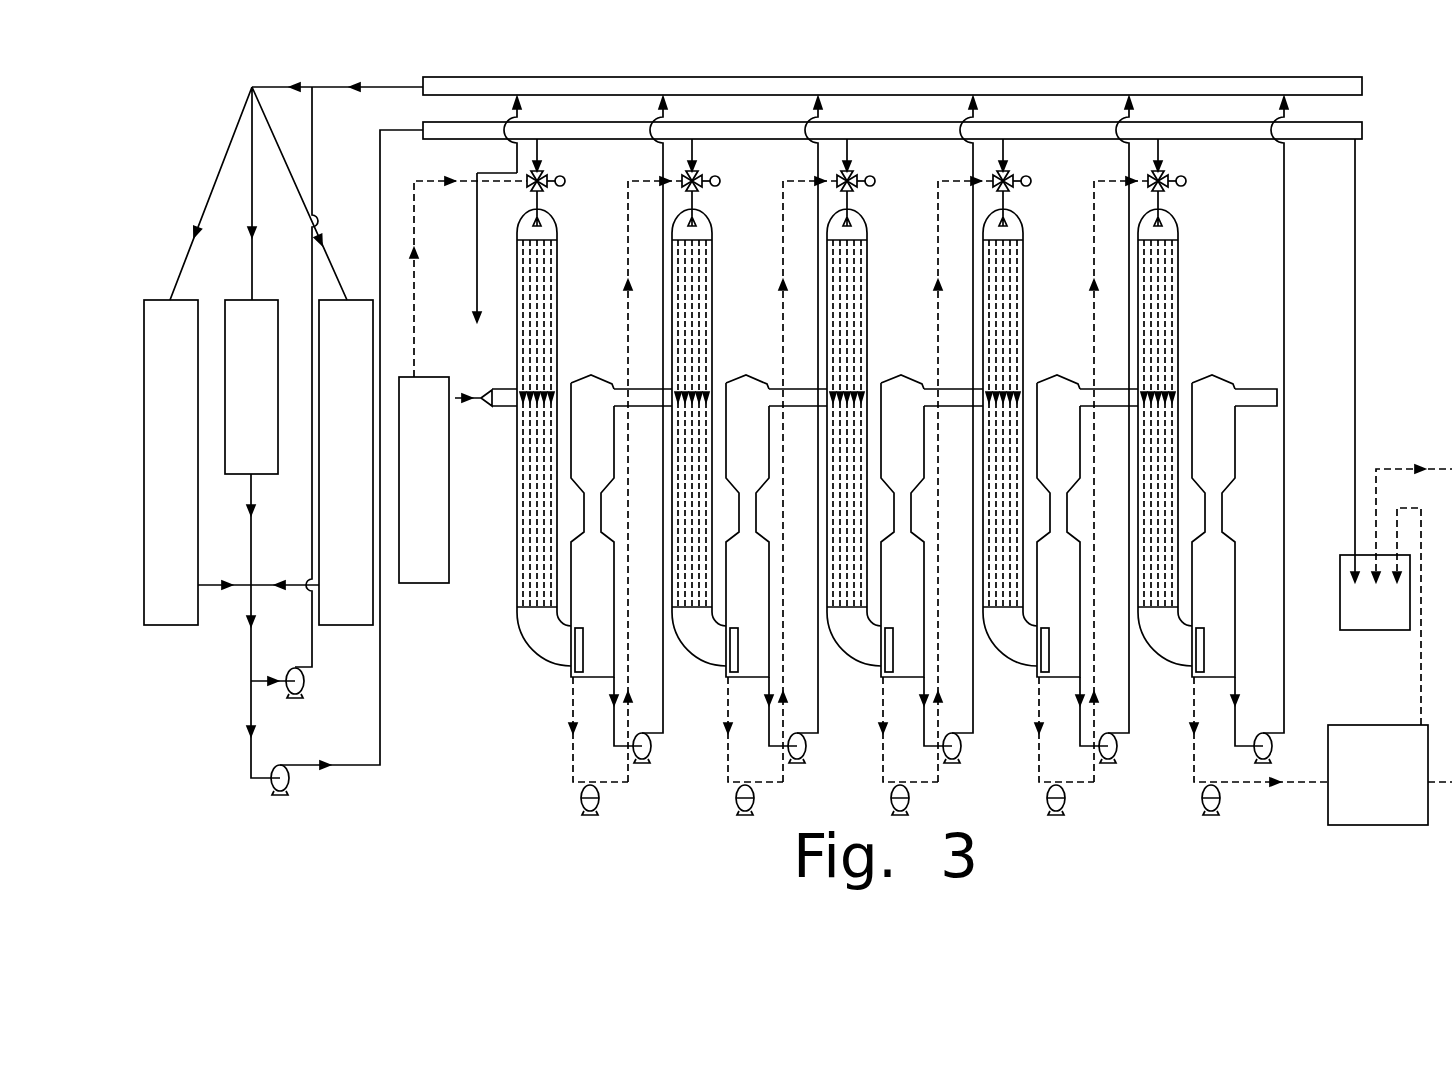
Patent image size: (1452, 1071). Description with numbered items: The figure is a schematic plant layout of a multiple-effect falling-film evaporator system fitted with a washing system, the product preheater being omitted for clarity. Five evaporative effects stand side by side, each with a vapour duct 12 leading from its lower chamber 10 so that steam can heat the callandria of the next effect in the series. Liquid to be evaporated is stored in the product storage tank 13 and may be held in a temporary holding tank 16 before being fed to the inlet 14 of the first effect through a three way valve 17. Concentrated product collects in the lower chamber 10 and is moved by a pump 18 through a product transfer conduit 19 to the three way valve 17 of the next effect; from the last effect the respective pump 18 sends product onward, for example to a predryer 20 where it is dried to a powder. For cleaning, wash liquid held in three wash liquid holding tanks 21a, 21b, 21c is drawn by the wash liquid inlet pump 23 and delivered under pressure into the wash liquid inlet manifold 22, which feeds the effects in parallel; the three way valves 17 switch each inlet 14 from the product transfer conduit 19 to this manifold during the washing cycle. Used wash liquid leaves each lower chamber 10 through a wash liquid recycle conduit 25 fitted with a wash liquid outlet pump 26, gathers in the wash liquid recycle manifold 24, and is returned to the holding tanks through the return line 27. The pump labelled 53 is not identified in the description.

The lower chamber 10 is at (593, 664).
The vapour duct 12 is at (579, 598).
The product storage tank 13 is at (1370, 631).
The inlet 14 is at (537, 212).
The temporary holding tank 16 is at (410, 463).
The three way valve 17 is at (541, 172).
The pump 18 is at (580, 800).
The product transfer conduit 19 is at (602, 782).
The predryer 20 is at (1364, 786).
The wash liquid holding tank 21a is at (192, 460).
The wash liquid holding tank 21b is at (272, 393).
The wash liquid holding tank 21c is at (367, 460).
The wash liquid inlet manifold 22 is at (428, 141).
The wash liquid inlet pump 23 is at (289, 790).
The wash liquid recycle manifold 24 is at (426, 96).
The wash liquid recycle conduit 25 is at (664, 690).
The wash liquid outlet pump 26 is at (651, 752).
The return line 27 is at (376, 90).
The pump 53 is at (304, 685).